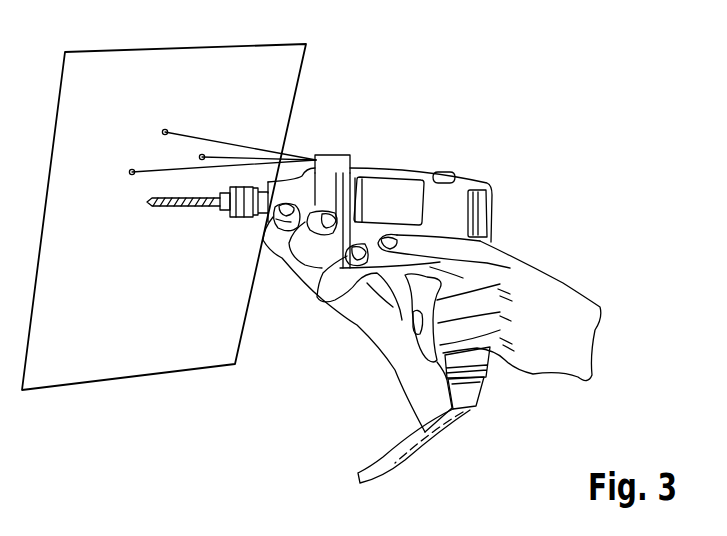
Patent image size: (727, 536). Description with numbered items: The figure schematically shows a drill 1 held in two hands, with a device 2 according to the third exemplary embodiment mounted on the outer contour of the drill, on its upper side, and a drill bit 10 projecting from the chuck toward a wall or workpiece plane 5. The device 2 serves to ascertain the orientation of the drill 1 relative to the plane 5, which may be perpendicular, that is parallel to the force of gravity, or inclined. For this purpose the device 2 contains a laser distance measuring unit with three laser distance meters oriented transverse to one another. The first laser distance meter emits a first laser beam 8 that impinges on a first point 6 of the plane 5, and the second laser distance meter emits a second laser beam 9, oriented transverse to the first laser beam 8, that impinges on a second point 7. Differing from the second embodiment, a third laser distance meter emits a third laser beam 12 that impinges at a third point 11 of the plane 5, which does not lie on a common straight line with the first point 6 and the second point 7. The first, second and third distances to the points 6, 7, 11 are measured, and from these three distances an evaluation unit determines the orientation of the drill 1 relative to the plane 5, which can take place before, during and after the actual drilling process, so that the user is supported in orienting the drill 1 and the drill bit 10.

The drill 1 is at (492, 119).
The device 2 is at (337, 157).
The plane 5 is at (140, 68).
The first point 6 is at (165, 129).
The second point 7 is at (129, 171).
The first laser beam 8 is at (200, 137).
The second laser beam 9 is at (157, 169).
The drill bit 10 is at (183, 207).
The third point 11 is at (206, 151).
The third laser beam 12 is at (234, 156).